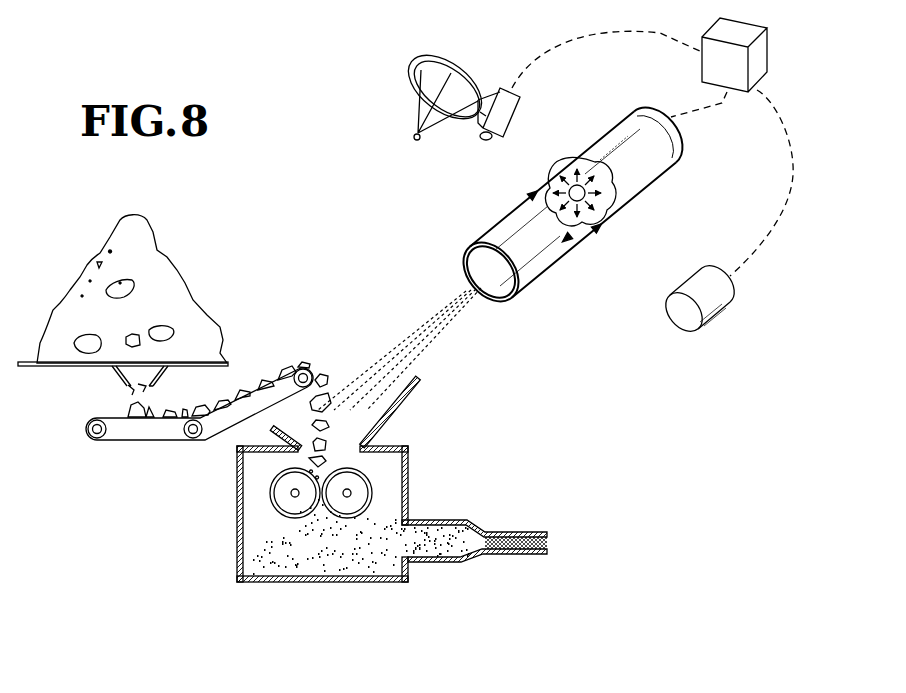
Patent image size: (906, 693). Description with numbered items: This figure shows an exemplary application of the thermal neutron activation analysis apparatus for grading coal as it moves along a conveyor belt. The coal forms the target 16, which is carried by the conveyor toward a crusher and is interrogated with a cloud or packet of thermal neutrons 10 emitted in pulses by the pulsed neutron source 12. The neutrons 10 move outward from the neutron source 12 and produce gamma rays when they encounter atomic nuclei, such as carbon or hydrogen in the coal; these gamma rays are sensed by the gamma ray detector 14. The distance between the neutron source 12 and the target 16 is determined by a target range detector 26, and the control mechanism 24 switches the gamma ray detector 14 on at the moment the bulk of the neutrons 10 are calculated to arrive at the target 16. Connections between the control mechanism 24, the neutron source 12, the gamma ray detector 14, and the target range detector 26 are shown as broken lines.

The thermal neutrons 10 is at (442, 330).
The pulsed neutron source 12 is at (569, 190).
The gamma ray detector 14 is at (717, 322).
The target 16 is at (326, 405).
The control mechanism 24 is at (743, 73).
The target range detector 26 is at (473, 62).